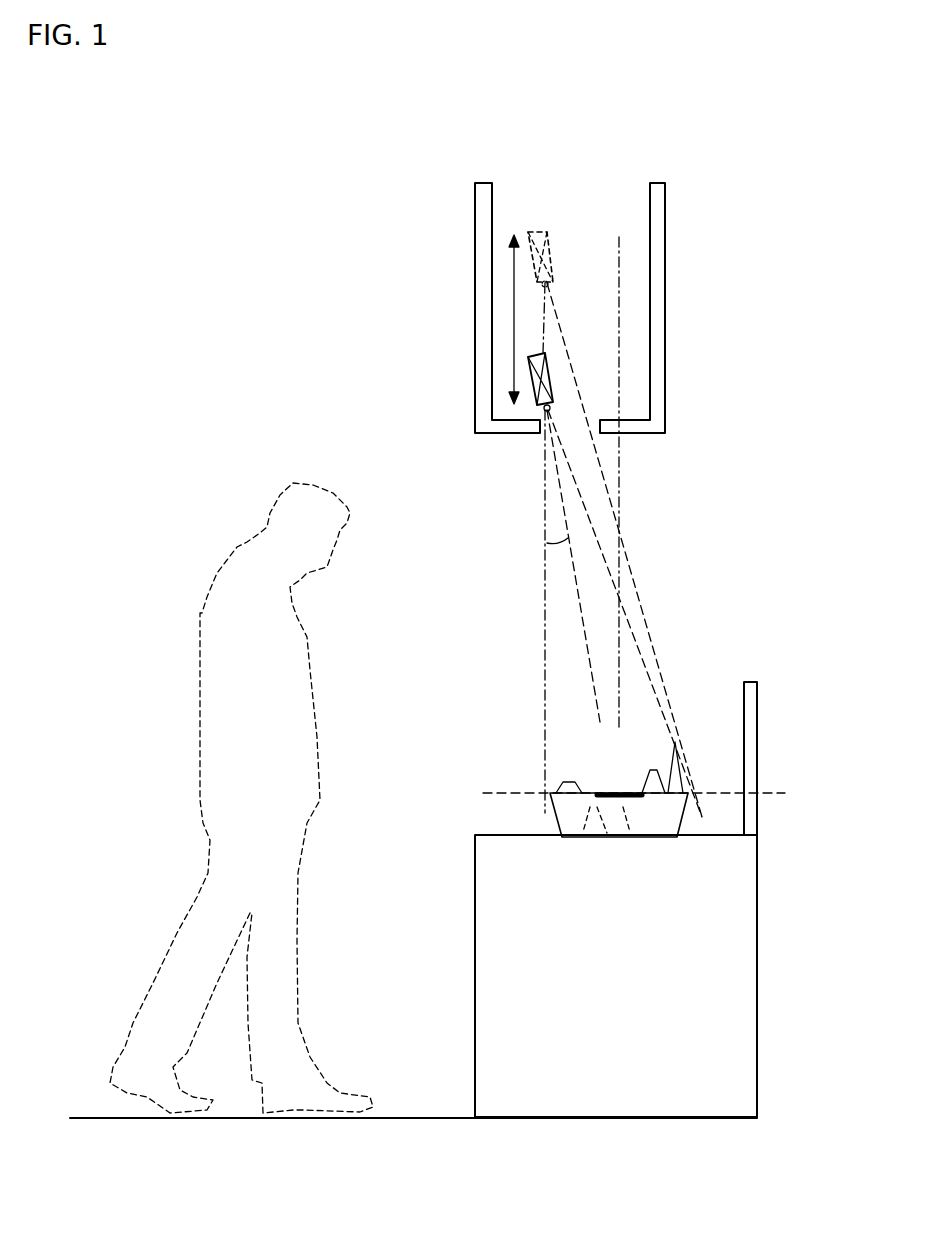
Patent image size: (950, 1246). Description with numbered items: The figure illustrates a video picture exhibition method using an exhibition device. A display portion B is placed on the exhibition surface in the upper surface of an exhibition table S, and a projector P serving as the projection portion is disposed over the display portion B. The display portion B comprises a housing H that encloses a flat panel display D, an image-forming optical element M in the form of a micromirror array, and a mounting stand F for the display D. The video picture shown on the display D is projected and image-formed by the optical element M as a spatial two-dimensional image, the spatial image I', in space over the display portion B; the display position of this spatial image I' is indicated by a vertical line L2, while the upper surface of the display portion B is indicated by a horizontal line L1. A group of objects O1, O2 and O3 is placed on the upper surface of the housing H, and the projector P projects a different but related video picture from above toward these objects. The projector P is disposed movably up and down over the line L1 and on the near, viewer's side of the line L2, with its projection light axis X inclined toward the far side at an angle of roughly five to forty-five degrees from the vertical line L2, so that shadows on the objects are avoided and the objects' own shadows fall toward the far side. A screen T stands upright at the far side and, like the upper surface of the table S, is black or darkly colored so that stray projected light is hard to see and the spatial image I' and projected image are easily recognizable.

The projector P is at (558, 375).
The exhibition table S is at (757, 960).
The screen T is at (757, 712).
The housing H is at (556, 823).
The spatial image I' is at (616, 766).
The object O1 is at (566, 776).
The object O2 is at (653, 769).
The object O3 is at (690, 766).
The horizontal line L1 is at (650, 795).
The vertical line L2 is at (623, 451).
The display portion B is at (537, 786).
The projection light axis X is at (577, 587).
The mounting stand F is at (595, 803).
The flat panel display D is at (602, 800).
The image-forming optical element M is at (618, 800).